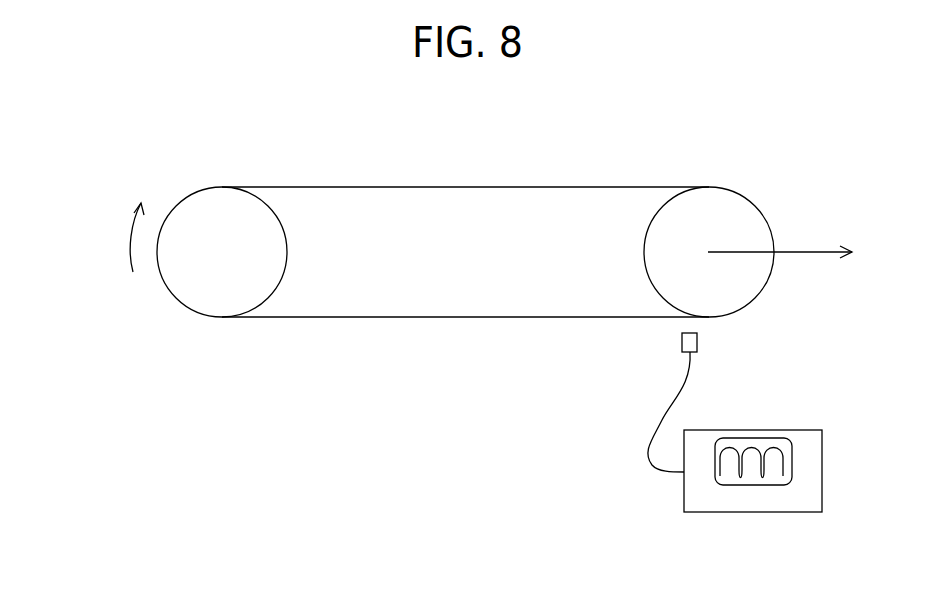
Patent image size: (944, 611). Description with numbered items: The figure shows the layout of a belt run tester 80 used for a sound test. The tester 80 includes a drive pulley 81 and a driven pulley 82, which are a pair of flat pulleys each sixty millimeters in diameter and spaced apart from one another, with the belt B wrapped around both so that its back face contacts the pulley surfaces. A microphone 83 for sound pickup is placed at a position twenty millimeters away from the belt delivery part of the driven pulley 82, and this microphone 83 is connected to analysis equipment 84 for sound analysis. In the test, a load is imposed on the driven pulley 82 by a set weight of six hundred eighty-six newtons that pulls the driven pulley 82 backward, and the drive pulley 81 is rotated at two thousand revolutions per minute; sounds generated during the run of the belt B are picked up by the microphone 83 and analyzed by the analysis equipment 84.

The belt run tester 80 is at (473, 120).
The drive pulley 81 is at (227, 307).
The driven pulley 82 is at (735, 300).
The microphone 83 is at (682, 340).
The analysis equipment 84 is at (742, 513).
The belt B is at (483, 318).